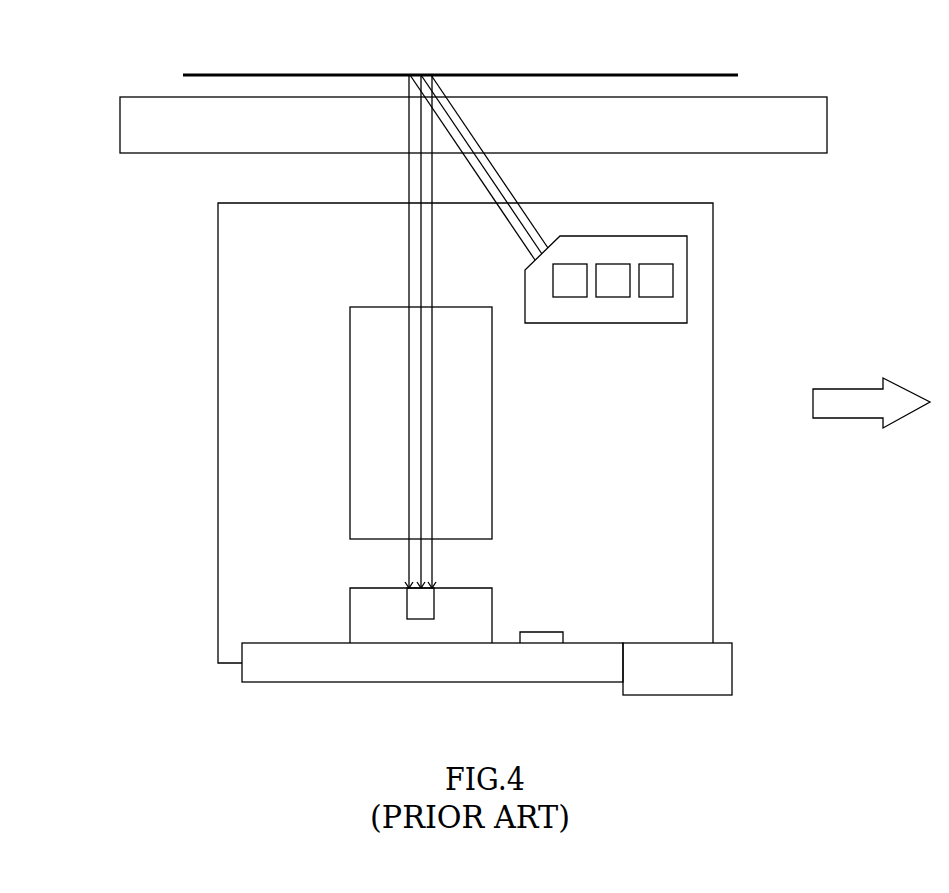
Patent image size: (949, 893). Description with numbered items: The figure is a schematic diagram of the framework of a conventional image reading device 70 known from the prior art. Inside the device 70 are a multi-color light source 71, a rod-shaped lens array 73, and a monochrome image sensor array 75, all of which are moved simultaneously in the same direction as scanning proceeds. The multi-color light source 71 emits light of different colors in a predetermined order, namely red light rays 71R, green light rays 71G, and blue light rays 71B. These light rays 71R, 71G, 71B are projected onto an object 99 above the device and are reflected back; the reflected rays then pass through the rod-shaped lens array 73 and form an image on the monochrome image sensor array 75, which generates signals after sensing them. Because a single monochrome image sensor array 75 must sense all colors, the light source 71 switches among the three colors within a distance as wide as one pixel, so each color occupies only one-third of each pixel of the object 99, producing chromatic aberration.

The object 99 is at (686, 73).
The conventional image reading device 70 is at (210, 580).
The multi-color light source 71 is at (724, 254).
The red light rays 71R is at (570, 264).
The green light rays 71G is at (612, 264).
The blue light rays 71B is at (660, 264).
The rod-shaped lens array 73 is at (350, 423).
The monochrome image sensor array 75 is at (422, 605).